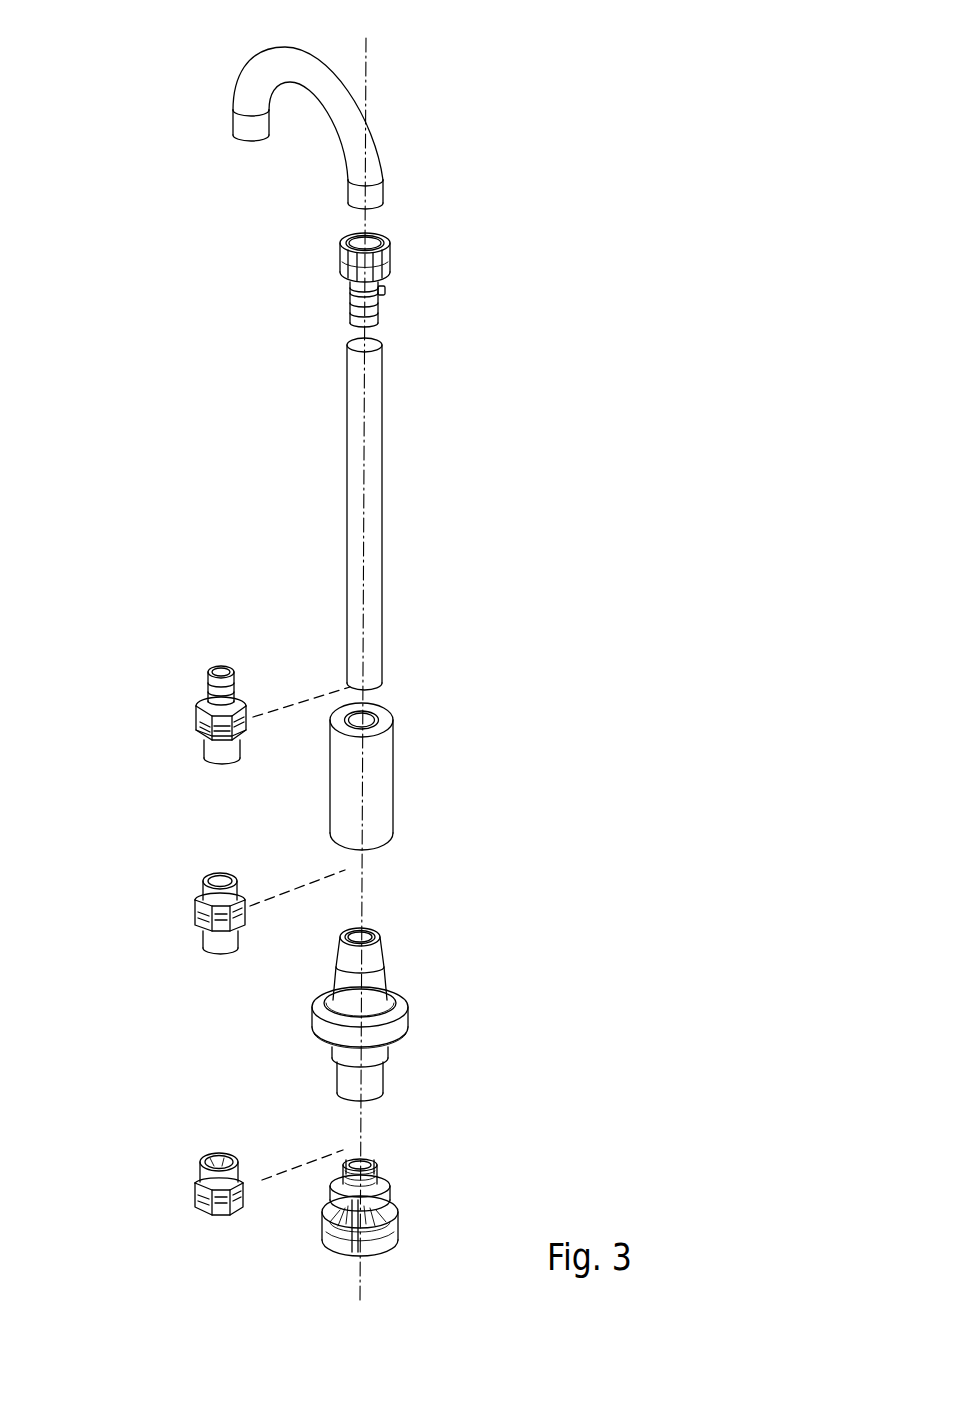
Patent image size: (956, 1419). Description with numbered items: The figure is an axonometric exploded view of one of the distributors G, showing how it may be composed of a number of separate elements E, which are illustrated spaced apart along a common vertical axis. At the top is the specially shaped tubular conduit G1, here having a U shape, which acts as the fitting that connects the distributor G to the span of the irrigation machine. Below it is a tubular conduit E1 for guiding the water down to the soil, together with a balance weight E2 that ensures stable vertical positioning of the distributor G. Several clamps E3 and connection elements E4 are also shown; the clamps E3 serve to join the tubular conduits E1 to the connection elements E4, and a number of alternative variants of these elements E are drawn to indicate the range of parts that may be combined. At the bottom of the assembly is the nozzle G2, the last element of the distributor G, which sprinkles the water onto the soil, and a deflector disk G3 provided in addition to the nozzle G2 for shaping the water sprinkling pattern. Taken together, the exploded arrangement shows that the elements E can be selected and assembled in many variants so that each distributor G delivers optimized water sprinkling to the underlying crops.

The distributor G is at (554, 125).
The fitting G1 is at (260, 68).
The nozzle G2 is at (382, 1197).
The deflector disk G3 is at (343, 1243).
The elements E is at (438, 267).
The tubular conduit E1 is at (347, 510).
The balance weight E2 is at (386, 747).
The clamp E3 is at (374, 313).
The connection element E4 is at (350, 300).